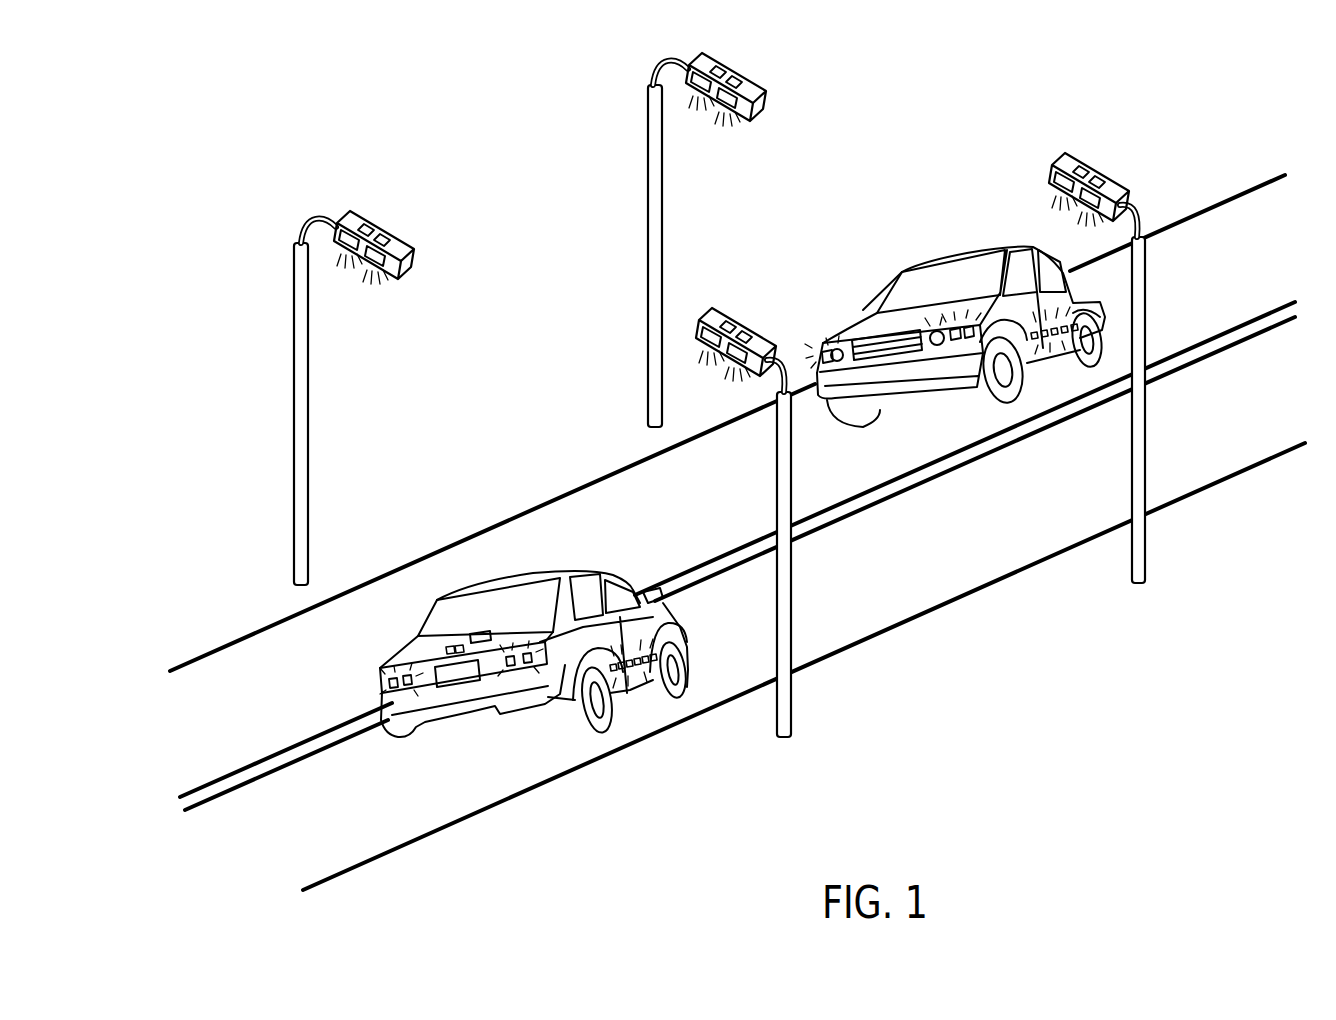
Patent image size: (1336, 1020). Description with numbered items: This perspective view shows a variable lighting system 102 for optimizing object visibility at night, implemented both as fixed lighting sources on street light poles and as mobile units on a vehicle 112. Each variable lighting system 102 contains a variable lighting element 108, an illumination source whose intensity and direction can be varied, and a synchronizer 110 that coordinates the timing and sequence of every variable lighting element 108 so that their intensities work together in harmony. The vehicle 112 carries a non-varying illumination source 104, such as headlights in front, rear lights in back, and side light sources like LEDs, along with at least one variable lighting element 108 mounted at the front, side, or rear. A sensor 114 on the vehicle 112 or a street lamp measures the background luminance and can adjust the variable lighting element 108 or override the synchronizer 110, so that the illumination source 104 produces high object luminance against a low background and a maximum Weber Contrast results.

The variable lighting system 102 is at (338, 207).
The illumination source 104 is at (332, 248).
The variable lighting element 108 is at (382, 268).
The synchronizer 110 is at (368, 224).
The vehicle 112 is at (908, 262).
The sensor 114 is at (388, 234).